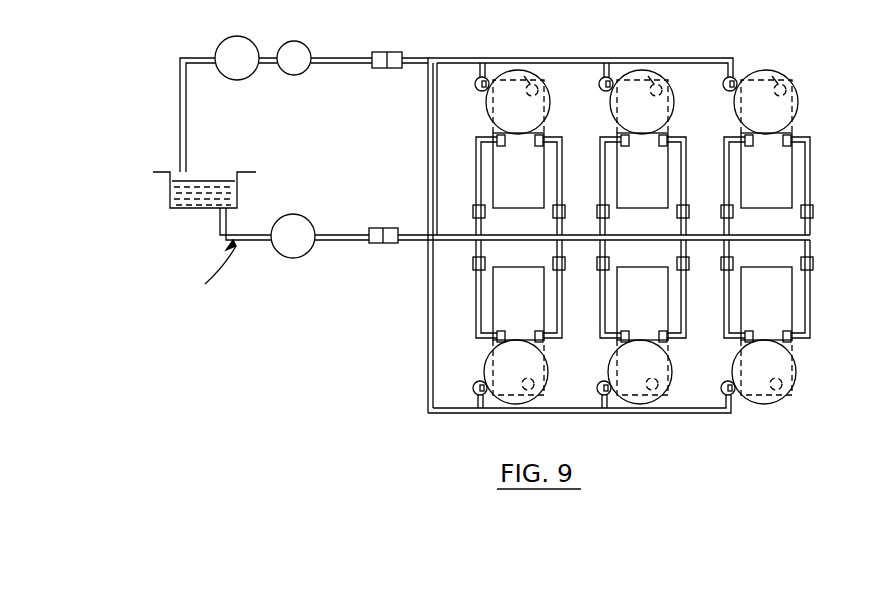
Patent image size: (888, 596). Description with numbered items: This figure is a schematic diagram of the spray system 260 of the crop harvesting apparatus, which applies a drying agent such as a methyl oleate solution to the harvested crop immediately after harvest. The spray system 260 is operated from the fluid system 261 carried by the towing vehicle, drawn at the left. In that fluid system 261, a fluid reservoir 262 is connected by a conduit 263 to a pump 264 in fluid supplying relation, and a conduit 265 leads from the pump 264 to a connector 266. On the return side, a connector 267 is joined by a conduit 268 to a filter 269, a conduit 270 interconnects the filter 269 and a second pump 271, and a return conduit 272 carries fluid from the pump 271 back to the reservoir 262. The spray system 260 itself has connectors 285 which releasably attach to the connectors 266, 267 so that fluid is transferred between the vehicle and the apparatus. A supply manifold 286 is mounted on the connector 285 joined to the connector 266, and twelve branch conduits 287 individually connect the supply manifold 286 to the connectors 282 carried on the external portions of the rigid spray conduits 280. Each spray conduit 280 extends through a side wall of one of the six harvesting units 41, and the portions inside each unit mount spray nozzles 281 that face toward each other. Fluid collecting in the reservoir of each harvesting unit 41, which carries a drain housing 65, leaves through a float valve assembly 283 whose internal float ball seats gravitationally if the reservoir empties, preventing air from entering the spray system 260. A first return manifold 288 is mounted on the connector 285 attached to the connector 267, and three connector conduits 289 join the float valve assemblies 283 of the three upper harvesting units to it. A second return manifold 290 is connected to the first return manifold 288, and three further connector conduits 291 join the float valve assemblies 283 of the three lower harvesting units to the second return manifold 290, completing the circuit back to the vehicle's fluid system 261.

The harvesting unit 41 is at (527, 192).
The drain housing 65 is at (521, 71).
The spray system 260 is at (424, 325).
The fluid system 261 is at (204, 267).
The fluid reservoir 262 is at (168, 204).
The conduit 263 is at (219, 228).
The pump 264 is at (285, 218).
The conduit 265 is at (330, 233).
The connector 266 is at (381, 244).
The connector 267 is at (379, 51).
The conduit 268 is at (325, 54).
The filter 269 is at (298, 74).
The conduit 270 is at (265, 55).
The pump 271 is at (232, 37).
The return conduit 272 is at (179, 98).
The spray conduit 280 is at (476, 168).
The spray nozzle 281 is at (538, 146).
The connector 282 is at (553, 213).
The float valve assembly 283 is at (478, 92).
The connector 285 is at (400, 52).
The supply manifold 286 is at (450, 241).
The branch conduit 287 is at (557, 233).
The first return manifold 288 is at (641, 58).
The connector conduit 289 is at (479, 72).
The second return manifold 290 is at (427, 377).
The connector conduit 291 is at (475, 400).